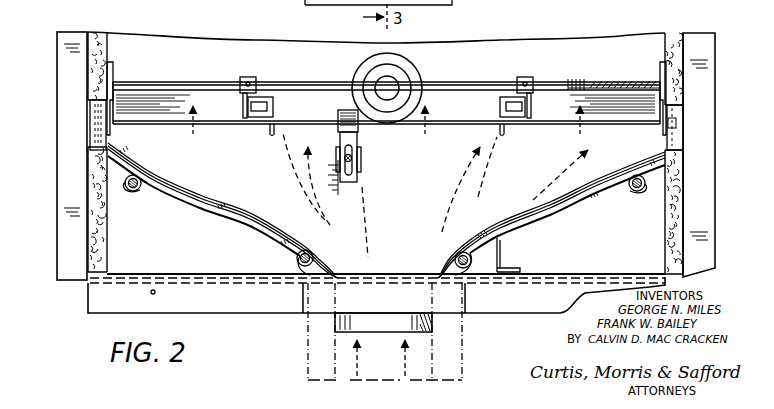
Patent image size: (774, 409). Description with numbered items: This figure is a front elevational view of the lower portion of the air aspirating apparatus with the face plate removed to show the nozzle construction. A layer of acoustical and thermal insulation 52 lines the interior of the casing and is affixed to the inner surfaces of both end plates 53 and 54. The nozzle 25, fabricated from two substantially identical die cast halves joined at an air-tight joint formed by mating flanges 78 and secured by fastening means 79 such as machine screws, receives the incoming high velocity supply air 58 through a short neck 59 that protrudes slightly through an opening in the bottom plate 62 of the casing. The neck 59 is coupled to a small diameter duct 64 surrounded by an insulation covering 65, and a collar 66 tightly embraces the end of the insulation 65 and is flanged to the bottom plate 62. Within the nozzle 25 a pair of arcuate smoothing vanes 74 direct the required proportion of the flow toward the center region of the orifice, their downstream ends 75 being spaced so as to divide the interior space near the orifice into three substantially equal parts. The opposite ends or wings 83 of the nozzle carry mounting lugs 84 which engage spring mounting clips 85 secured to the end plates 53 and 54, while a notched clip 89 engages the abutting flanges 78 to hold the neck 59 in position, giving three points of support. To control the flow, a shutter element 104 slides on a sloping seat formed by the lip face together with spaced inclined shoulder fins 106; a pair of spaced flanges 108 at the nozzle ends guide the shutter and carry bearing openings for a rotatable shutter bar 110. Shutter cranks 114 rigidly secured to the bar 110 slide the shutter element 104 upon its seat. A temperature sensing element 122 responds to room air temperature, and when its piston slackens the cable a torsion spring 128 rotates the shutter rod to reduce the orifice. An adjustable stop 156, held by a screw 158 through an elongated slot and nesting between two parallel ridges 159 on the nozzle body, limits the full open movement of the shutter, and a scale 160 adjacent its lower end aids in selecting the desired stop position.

The nozzle 25 is at (226, 219).
The acoustical and thermal insulation 52 is at (98, 46).
The end plate 53 is at (88, 172).
The end plate 54 is at (690, 150).
The high velocity supply air 58 is at (404, 362).
The neck 59 is at (430, 331).
The bottom plate 62 is at (557, 274).
The duct 64 is at (432, 383).
The insulation covering 65 is at (455, 5).
The collar 66 is at (470, 315).
The arcuate smoothing vanes 74 is at (301, 184).
The downstream ends 75 is at (272, 136).
The mating flanges 78 is at (550, 218).
The fastening means 79 is at (134, 192).
The wings 83 is at (183, 196).
The mounting lugs 84 is at (90, 148).
The spring mounting clips 85 is at (90, 105).
The notched clip 89 is at (501, 245).
The shutter element 104 is at (295, 98).
The shoulder fins 106 is at (198, 128).
The flanges 108 is at (113, 72).
The shutter bar 110 is at (175, 82).
The shutter cranks 114 is at (252, 74).
The temperature sensing element 122 is at (398, 80).
The torsion spring 128 is at (582, 72).
The stop 156 is at (359, 133).
The screw 158 is at (352, 162).
The parallel ridges 159 is at (338, 152).
The scale 160 is at (333, 190).